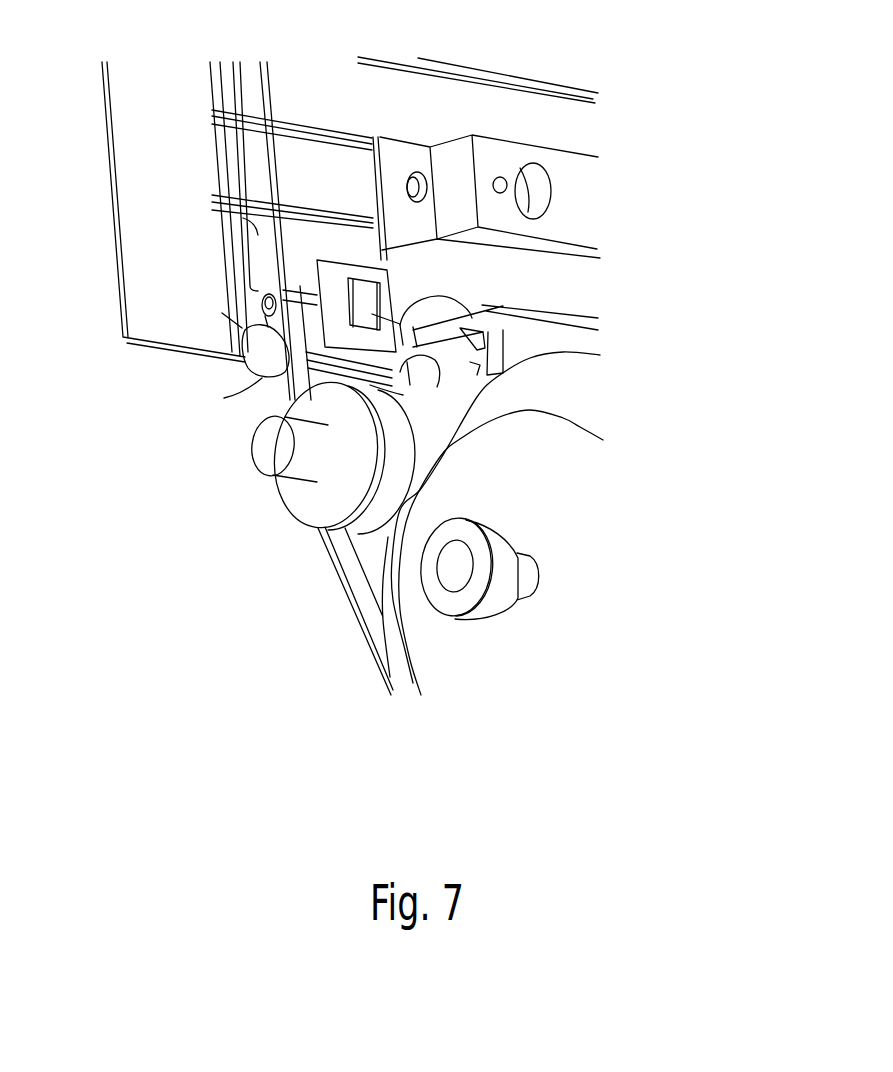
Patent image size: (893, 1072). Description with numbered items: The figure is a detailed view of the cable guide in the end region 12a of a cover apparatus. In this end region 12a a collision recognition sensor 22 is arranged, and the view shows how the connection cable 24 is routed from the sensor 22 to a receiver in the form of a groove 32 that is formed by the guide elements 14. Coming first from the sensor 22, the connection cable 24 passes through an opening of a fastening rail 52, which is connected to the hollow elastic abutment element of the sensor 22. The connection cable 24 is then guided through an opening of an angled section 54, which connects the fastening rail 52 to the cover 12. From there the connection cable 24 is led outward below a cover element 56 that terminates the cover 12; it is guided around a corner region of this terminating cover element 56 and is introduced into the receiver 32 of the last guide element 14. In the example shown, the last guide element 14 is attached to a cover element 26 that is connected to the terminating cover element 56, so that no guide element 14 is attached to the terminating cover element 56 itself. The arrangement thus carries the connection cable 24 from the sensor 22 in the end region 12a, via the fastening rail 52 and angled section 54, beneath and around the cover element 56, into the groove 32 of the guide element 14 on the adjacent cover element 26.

The cover 12 is at (438, 94).
The end region 12a is at (636, 328).
The guide element 14 is at (240, 205).
The sensor 22 is at (447, 400).
The connection cable 24 is at (258, 352).
The cover element 26 is at (297, 247).
The groove 32 is at (240, 233).
The fastening rail 52 is at (520, 330).
The angled section 54 is at (530, 277).
The cover element 56 is at (263, 313).